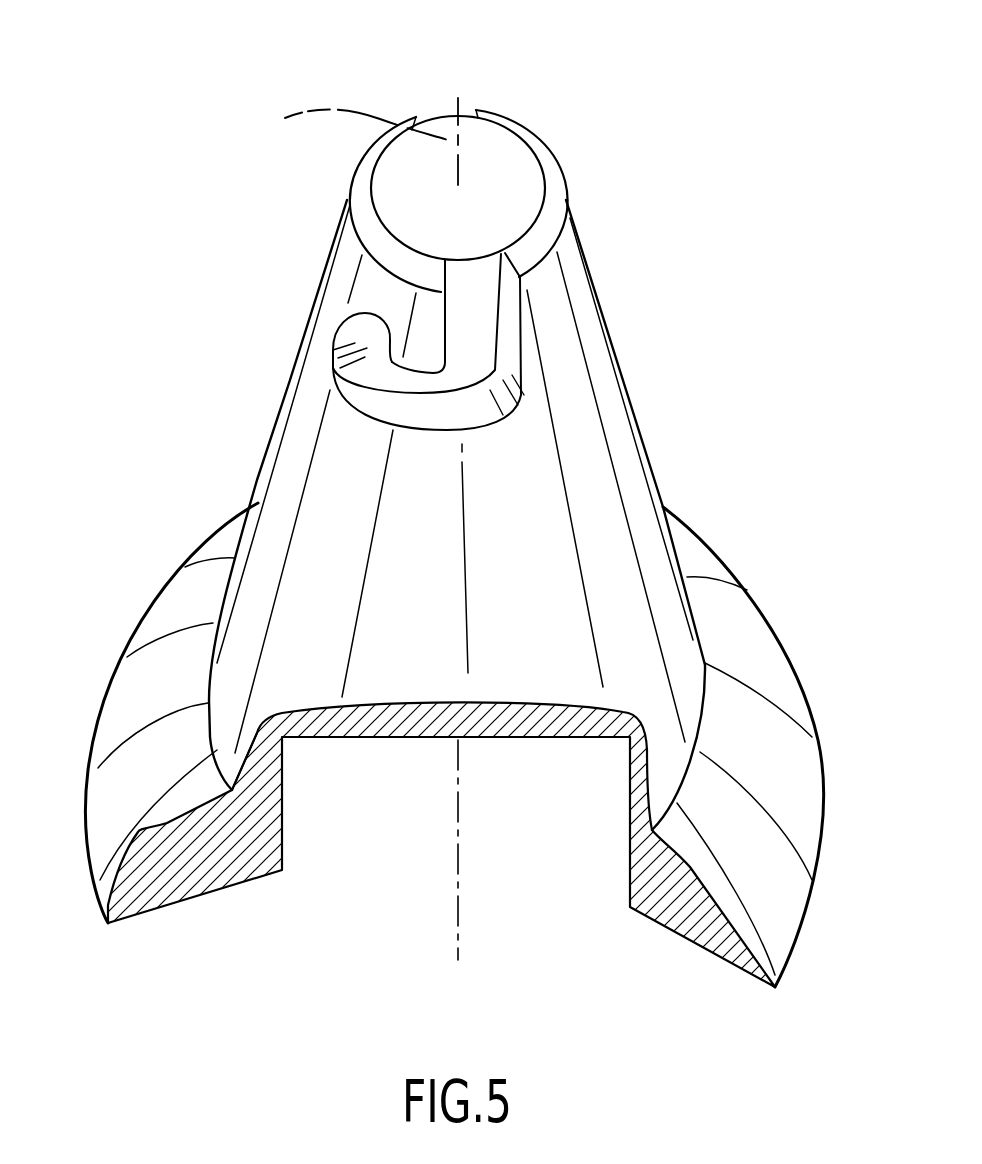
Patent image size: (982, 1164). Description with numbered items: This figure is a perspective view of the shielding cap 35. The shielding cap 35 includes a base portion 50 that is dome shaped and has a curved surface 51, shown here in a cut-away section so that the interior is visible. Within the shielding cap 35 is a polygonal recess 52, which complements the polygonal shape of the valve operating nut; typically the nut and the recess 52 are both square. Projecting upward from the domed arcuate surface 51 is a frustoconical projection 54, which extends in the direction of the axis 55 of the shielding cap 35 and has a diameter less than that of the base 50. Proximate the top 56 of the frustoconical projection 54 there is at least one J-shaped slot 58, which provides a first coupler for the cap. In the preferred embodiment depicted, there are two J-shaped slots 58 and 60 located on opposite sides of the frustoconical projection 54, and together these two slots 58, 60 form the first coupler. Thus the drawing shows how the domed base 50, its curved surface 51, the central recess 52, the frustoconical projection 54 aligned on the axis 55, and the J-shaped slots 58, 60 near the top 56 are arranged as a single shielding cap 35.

The shielding cap 35 is at (243, 424).
The base portion 50 is at (760, 627).
The curved surface 51 is at (177, 598).
The polygonal recess 52 is at (360, 802).
The frustoconical projection 54 is at (578, 258).
The axis 55 is at (352, 126).
The top 56 is at (519, 165).
The J-shaped slot 58 is at (484, 331).
The J-shaped slot 60 is at (443, 110).